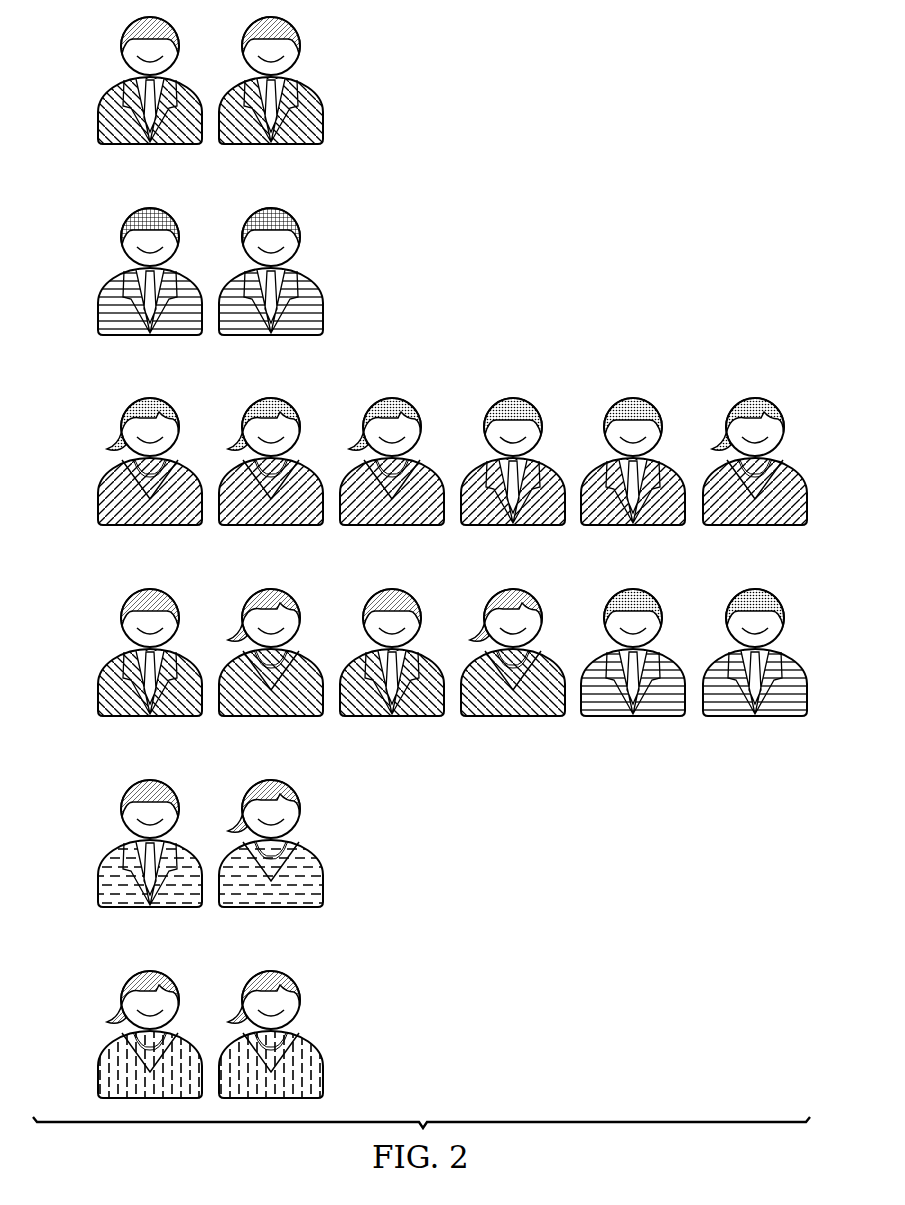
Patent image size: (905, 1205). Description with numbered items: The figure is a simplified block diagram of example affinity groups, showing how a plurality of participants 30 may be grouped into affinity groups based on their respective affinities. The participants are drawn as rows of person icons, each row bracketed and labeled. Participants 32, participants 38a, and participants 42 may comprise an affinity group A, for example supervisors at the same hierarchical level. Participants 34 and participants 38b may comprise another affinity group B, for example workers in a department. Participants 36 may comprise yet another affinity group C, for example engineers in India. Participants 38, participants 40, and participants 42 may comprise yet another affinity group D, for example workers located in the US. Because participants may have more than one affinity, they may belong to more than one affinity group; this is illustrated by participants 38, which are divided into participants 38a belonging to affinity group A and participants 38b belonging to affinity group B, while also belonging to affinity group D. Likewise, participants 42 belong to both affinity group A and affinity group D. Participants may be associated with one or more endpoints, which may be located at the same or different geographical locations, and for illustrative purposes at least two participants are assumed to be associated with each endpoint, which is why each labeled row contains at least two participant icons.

The plurality of participants 30 is at (608, 228).
The participants 32 is at (181, 80).
The participants 34 is at (181, 271).
The participants 36 is at (423, 461).
The participants 38 is at (424, 679).
The participants 38a is at (97, 727).
The participants 38b is at (808, 727).
The participants 40 is at (181, 843).
The participants 42 is at (181, 1034).